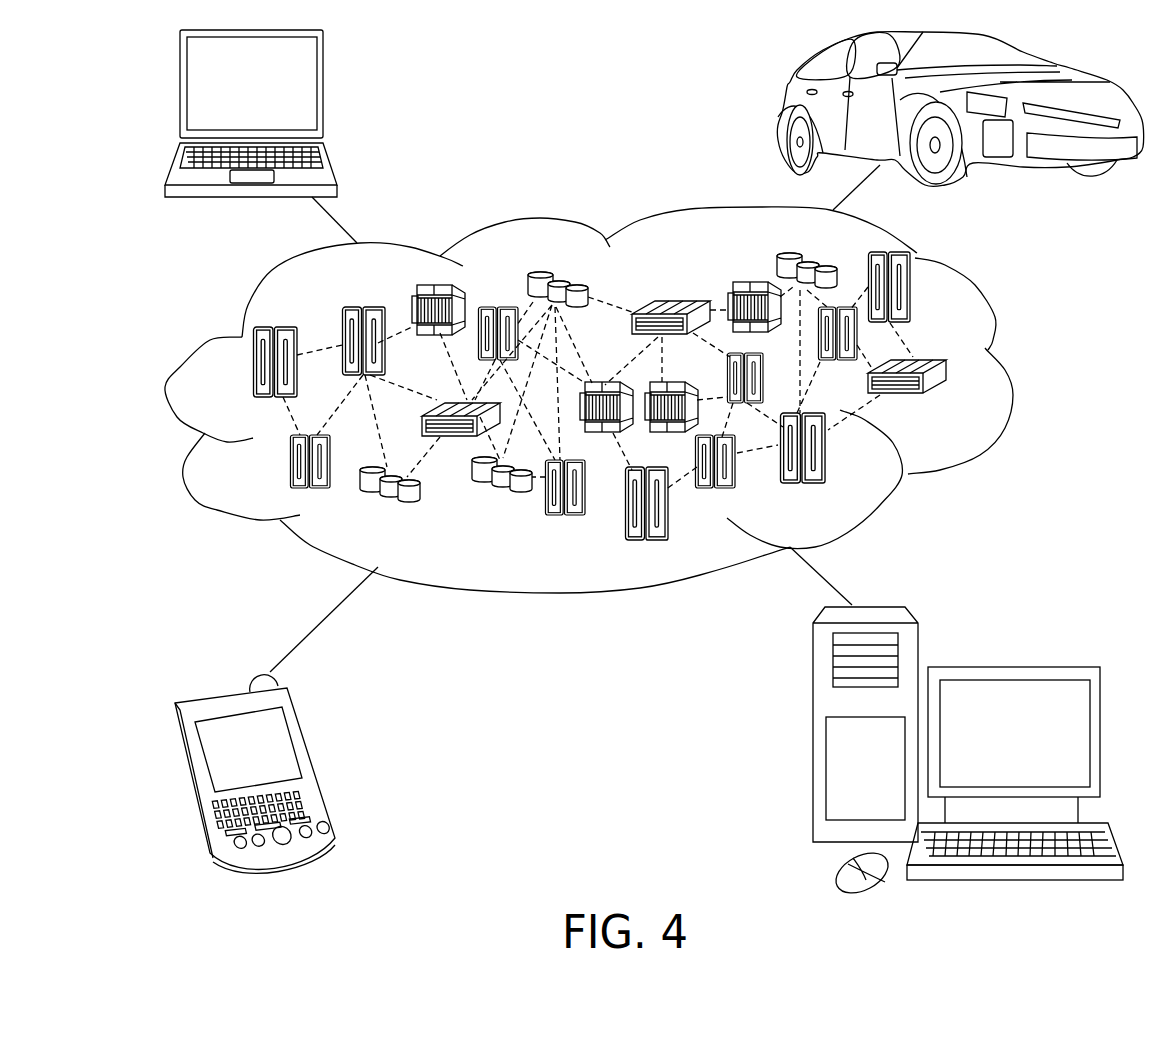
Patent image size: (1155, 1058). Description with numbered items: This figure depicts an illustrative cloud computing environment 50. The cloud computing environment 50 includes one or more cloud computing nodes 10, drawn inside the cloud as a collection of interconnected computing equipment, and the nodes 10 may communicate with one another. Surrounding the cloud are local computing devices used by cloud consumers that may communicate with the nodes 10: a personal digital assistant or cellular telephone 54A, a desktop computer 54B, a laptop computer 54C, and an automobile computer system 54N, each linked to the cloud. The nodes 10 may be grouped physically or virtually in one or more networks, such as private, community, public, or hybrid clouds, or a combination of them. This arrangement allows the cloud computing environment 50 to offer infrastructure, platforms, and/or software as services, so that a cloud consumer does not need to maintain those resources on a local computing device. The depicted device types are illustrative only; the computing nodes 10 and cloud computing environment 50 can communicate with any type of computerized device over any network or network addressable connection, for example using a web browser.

The cloud computing nodes 10 is at (954, 405).
The cloud computing environment 50 is at (1013, 375).
The personal digital assistant (PDA) or cellular telephone 54A is at (317, 763).
The desktop computer 54B is at (1023, 667).
The laptop computer 54C is at (328, 95).
The automobile computer system 54N is at (782, 110).